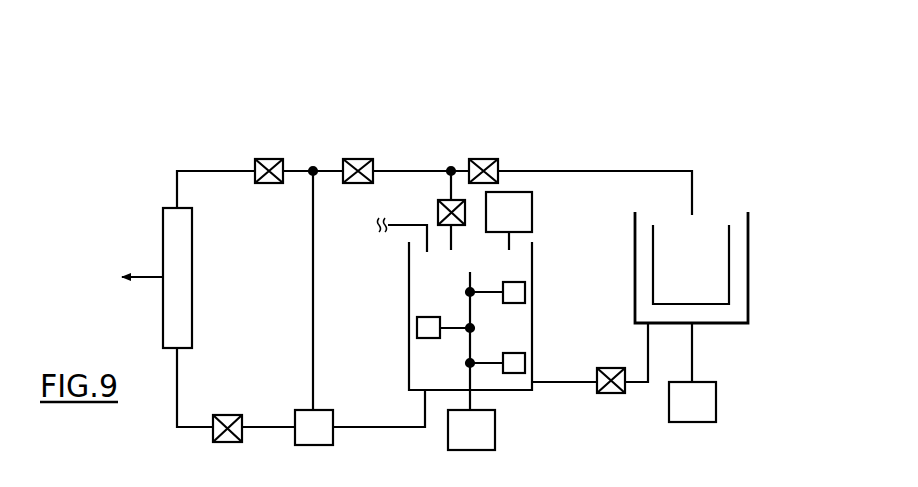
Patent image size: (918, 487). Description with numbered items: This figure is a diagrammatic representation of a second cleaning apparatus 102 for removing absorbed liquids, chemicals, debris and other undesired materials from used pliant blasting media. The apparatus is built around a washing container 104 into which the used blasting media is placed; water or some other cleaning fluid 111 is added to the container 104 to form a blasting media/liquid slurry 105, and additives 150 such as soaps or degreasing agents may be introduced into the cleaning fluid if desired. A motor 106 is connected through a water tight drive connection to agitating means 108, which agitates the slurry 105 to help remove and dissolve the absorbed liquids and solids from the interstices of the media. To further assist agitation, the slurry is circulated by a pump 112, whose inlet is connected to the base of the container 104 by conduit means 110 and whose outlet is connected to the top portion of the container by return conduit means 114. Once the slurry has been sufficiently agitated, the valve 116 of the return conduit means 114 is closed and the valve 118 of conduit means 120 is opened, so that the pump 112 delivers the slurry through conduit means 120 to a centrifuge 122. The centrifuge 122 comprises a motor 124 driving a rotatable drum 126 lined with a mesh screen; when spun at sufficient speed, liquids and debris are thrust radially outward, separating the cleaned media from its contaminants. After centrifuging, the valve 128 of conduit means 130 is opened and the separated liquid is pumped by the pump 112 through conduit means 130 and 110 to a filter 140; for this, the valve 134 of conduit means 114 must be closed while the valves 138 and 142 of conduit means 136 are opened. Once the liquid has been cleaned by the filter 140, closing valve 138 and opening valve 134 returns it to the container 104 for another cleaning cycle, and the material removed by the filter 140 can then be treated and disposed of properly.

The second cleaning apparatus 102 is at (480, 124).
The washing container 104 is at (532, 268).
The blasting media/liquid slurry 105 is at (446, 301).
The motor 106 is at (470, 451).
The agitating means 108 is at (470, 350).
The conduit means 110 is at (362, 430).
The cleaning fluid 111 is at (410, 228).
The pump 112 is at (312, 445).
The return conduit means 114 is at (313, 285).
The valve 116 is at (438, 212).
The valve 118 is at (485, 159).
The conduit means 120 is at (594, 171).
The centrifuge 122 is at (752, 270).
The motor 124 is at (716, 392).
The rotatable drum 126 is at (655, 237).
The valve 128 is at (602, 368).
The conduit means 130 is at (563, 383).
The valve 134 is at (360, 159).
The conduit means 136 is at (217, 171).
The valve 138 is at (271, 159).
The filter 140 is at (192, 277).
The valve 142 is at (222, 442).
The additives 150 is at (532, 205).